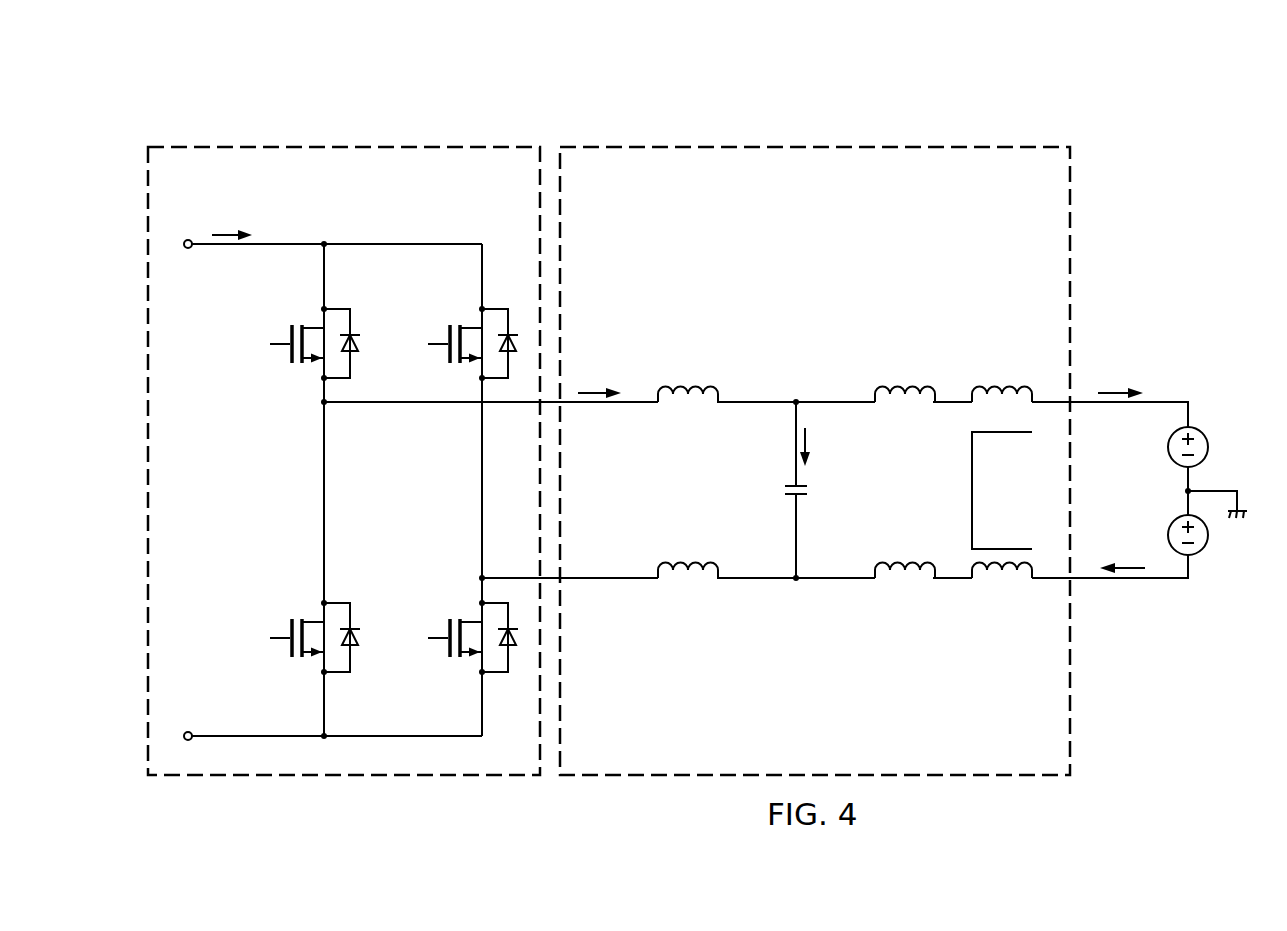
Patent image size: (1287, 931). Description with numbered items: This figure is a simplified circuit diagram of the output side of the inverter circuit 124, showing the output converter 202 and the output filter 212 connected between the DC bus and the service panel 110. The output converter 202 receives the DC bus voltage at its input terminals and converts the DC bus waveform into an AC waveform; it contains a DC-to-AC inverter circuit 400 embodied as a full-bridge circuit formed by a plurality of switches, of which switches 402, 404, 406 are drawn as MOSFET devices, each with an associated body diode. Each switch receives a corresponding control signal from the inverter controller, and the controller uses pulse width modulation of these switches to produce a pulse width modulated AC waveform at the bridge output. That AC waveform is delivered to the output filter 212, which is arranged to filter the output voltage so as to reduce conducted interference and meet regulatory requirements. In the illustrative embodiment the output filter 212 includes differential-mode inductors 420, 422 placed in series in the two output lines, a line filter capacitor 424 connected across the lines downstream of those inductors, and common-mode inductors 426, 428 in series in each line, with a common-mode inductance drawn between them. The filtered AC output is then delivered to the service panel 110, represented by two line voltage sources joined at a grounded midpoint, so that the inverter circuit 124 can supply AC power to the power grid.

The inverter circuit 124 is at (997, 107).
The output converter 202 is at (346, 147).
The output filter 212 is at (825, 147).
The DC-to-AC inverter circuit 400 is at (408, 224).
The switch 402 is at (286, 324).
The switch 404 is at (287, 660).
The switch 406 is at (444, 324).
The differential-mode inductor 420 is at (681, 400).
The differential-mode inductor 422 is at (681, 576).
The line filter capacitor 424 is at (790, 493).
The common-mode inductor 426 is at (910, 398).
The common-mode inductor 428 is at (910, 576).
The service panel 110 is at (1204, 364).